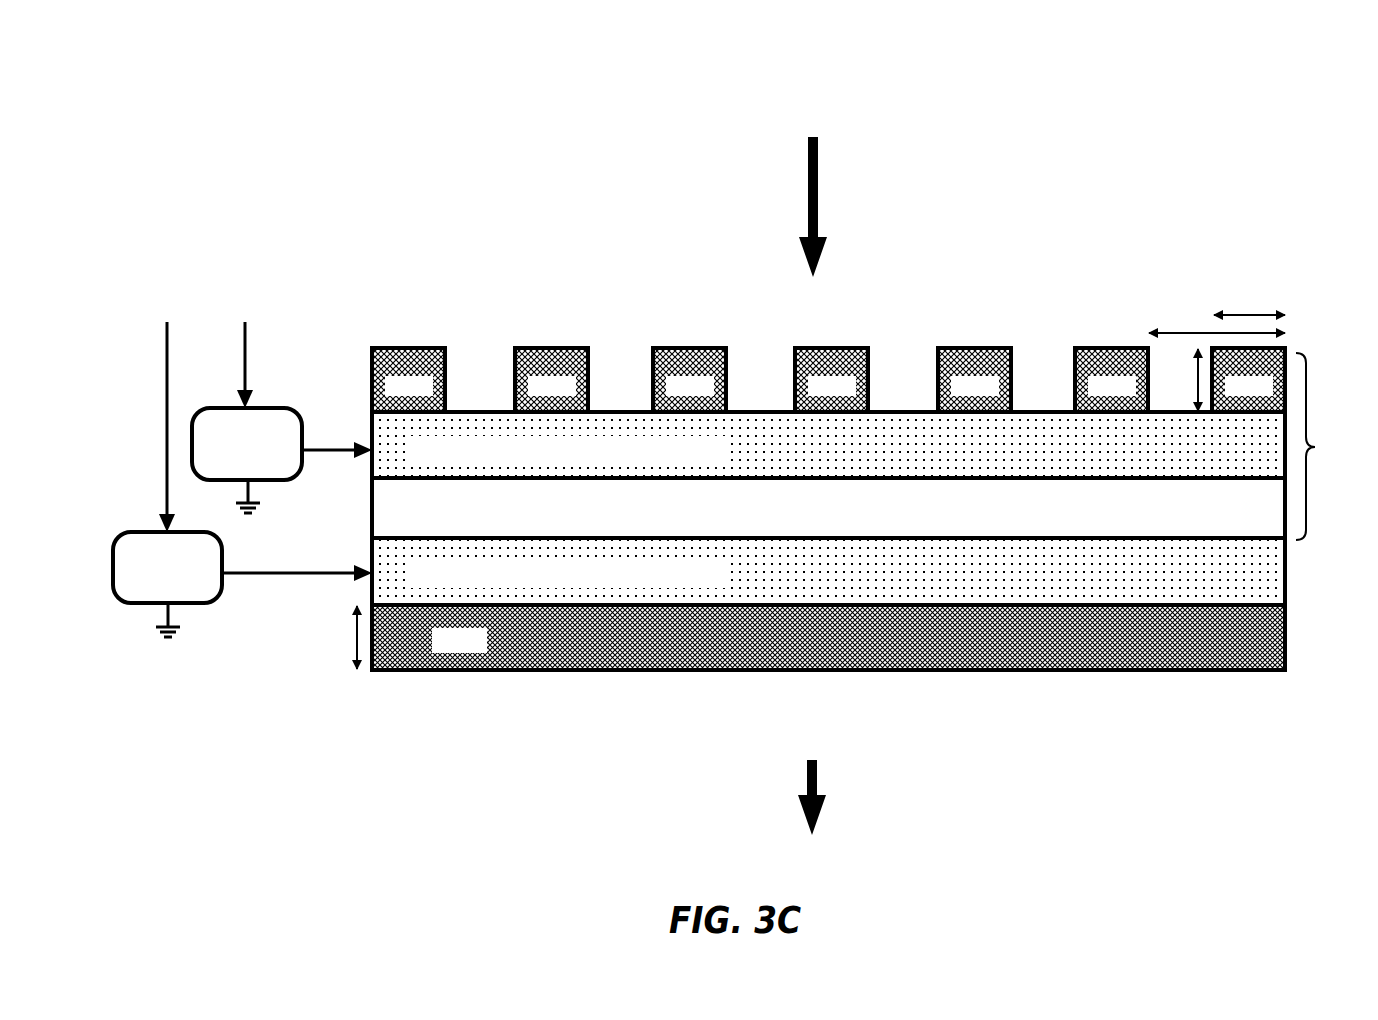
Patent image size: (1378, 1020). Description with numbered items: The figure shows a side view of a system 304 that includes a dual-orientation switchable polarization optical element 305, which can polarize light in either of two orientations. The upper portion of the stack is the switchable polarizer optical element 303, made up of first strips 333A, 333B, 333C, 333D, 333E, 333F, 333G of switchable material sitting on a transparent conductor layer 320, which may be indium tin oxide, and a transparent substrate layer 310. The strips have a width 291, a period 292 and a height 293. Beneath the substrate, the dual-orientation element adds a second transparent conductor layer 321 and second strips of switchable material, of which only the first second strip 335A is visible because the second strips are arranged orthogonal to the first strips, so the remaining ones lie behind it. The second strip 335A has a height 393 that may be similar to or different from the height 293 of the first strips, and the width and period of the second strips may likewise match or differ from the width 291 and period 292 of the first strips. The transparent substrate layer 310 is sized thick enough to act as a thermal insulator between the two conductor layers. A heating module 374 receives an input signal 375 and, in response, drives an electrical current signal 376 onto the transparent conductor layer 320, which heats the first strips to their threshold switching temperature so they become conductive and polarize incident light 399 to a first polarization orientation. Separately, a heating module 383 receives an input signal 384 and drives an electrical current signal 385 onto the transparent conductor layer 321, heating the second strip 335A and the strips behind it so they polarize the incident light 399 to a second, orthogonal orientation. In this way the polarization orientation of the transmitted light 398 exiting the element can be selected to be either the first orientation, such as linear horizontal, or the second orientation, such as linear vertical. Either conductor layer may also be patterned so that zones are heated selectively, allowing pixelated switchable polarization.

The system 304 is at (1312, 41).
The dual-orientation switchable polarization optical element 305 is at (1270, 216).
The incident light 399 is at (813, 191).
The transmitted light 398 is at (812, 781).
The input signal 384 is at (165, 410).
The input signal 375 is at (243, 348).
The heating module 374 is at (231, 471).
The electrical current signal 376 is at (337, 439).
The heating module 383 is at (152, 592).
The electrical current signal 385 is at (297, 561).
The height 393 is at (338, 637).
The strip 333A is at (389, 395).
The strip 333B is at (532, 395).
The strip 333C is at (670, 395).
The strip 333D is at (812, 395).
The strip 333E is at (955, 395).
The strip 333F is at (1092, 395).
The strip 333G is at (1229, 395).
The transparent conductor layer 320 is at (721, 459).
The transparent substrate layer 310 is at (630, 516).
The second transparent conductor layer 321 is at (721, 586).
The second strip 335A is at (439, 650).
The width 291 is at (1249, 297).
The period 292 is at (1217, 321).
The height 293 is at (1183, 380).
The switchable polarizer optical element 303 is at (1328, 446).